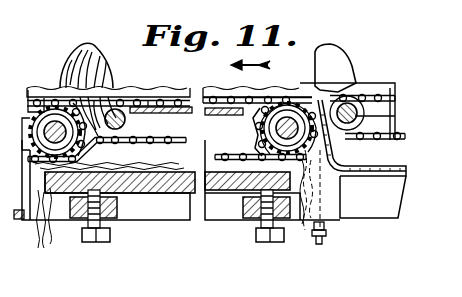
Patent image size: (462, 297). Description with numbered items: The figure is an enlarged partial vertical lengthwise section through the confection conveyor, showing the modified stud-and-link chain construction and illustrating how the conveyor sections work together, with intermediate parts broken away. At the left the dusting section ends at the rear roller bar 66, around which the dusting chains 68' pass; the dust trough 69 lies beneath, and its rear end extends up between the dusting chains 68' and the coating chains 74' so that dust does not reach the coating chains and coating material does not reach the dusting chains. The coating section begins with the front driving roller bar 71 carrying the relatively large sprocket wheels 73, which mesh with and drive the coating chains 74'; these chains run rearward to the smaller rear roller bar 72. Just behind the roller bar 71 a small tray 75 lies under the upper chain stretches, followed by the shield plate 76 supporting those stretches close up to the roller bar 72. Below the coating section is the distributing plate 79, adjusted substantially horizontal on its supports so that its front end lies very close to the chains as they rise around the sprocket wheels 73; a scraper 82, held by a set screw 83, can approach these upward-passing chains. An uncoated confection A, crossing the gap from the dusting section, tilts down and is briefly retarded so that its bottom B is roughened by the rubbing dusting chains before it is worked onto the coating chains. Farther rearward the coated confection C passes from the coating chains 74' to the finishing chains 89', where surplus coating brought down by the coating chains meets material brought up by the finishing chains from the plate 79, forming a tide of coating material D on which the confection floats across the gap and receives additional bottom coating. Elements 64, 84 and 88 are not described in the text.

The uncoated confection A is at (332, 57).
The bottom of the uncoated confection B is at (340, 93).
The coated confection C is at (100, 66).
The tide of coating material D is at (112, 90).
The base frame 64 is at (168, 212).
The rear roller bar 66 is at (380, 116).
The stud-and-link dusting chains 68' is at (367, 98).
The dust trough 69 is at (373, 197).
The front roller bar 71 is at (291, 116).
The rear roller bar 72 is at (107, 150).
The sprocket wheels 73 is at (266, 124).
The stud-and-link coating chains 74' is at (161, 87).
The tray 75 is at (212, 94).
The shield plate 76 is at (148, 97).
The distributing plate 79 is at (138, 190).
The scraper 82 is at (331, 158).
The set screw 83 is at (326, 242).
The roller 84 is at (43, 140).
The bracket 88 is at (30, 126).
The stud-and-link finishing chains 89' is at (35, 88).